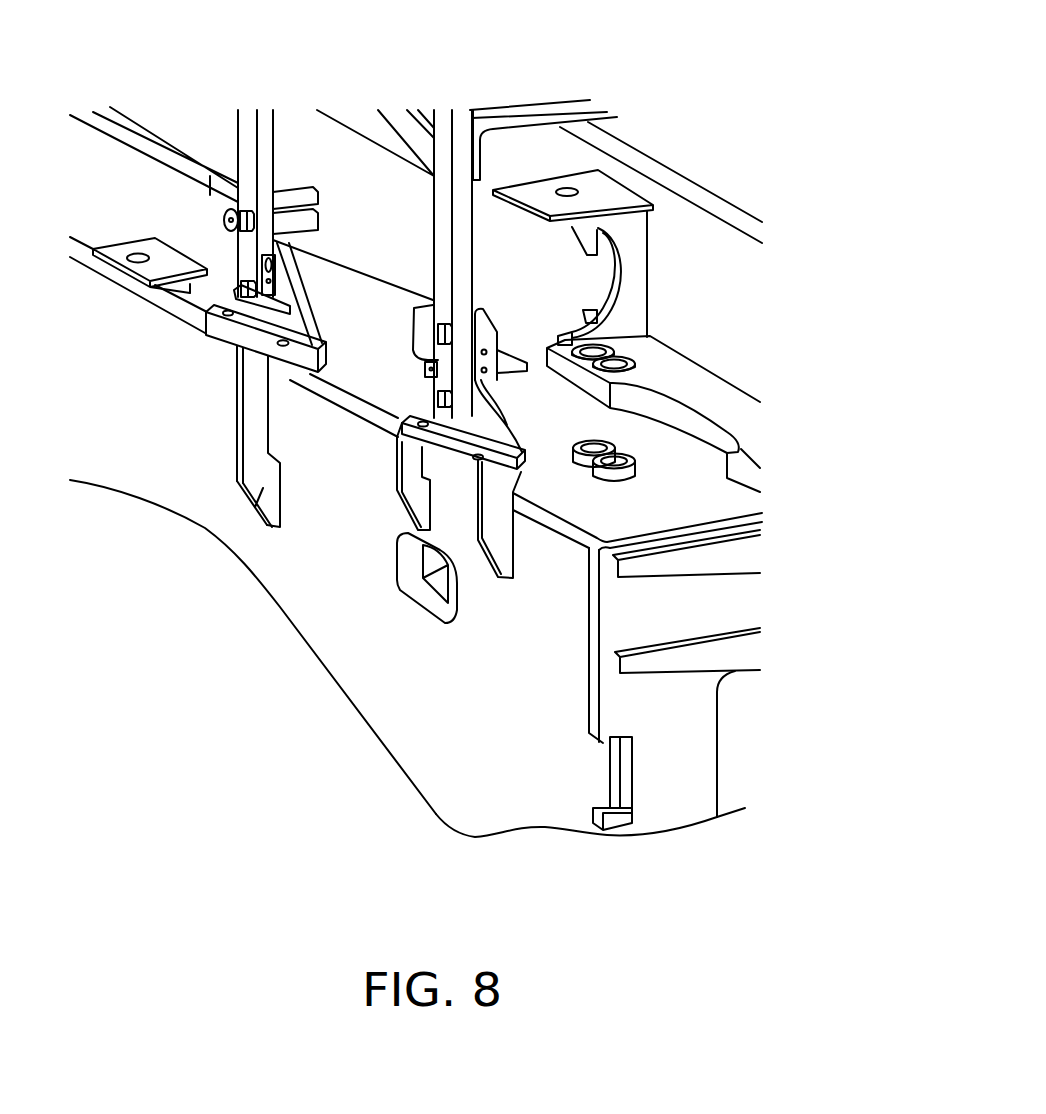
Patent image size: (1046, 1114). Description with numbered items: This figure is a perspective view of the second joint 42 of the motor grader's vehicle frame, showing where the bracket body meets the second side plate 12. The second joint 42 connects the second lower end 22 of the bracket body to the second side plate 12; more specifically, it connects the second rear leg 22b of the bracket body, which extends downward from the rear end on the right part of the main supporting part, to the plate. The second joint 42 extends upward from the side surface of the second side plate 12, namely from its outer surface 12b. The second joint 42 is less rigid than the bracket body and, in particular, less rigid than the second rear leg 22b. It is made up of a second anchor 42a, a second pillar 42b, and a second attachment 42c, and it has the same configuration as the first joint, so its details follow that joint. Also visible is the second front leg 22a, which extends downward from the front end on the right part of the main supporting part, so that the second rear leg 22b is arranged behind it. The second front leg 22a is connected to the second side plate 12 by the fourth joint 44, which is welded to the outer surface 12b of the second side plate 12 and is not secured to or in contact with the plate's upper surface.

The second side plate 12 is at (306, 642).
The outer surface 12b is at (373, 677).
The second lower end 22 is at (89, 4).
The second front leg 22a is at (413, 357).
The second rear leg 22b is at (247, 255).
The second joint 42 is at (231, 410).
The second anchor 42a is at (263, 488).
The second pillar 42b is at (255, 428).
The second attachment 42c is at (227, 340).
The fourth joint 44 is at (503, 534).